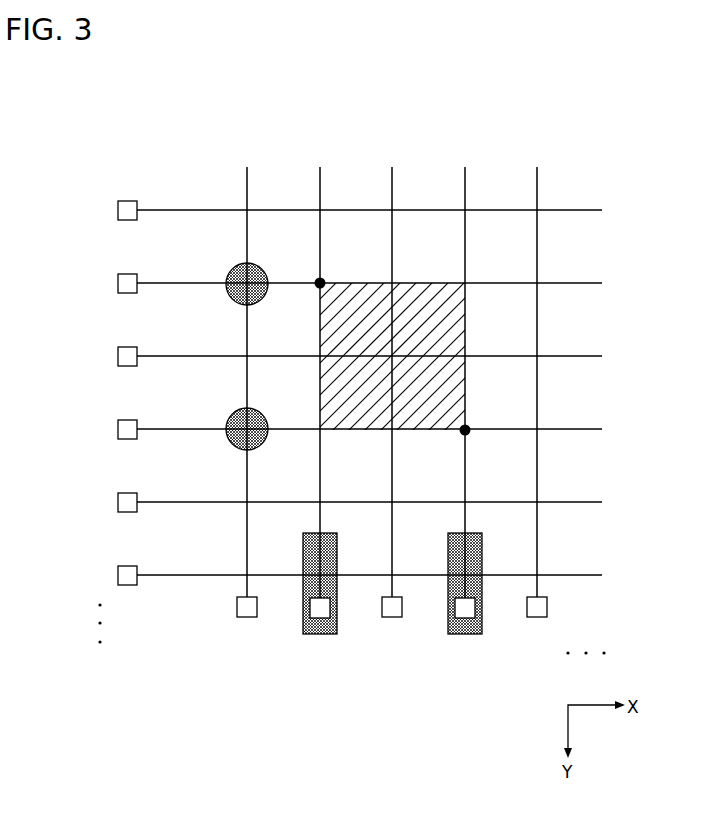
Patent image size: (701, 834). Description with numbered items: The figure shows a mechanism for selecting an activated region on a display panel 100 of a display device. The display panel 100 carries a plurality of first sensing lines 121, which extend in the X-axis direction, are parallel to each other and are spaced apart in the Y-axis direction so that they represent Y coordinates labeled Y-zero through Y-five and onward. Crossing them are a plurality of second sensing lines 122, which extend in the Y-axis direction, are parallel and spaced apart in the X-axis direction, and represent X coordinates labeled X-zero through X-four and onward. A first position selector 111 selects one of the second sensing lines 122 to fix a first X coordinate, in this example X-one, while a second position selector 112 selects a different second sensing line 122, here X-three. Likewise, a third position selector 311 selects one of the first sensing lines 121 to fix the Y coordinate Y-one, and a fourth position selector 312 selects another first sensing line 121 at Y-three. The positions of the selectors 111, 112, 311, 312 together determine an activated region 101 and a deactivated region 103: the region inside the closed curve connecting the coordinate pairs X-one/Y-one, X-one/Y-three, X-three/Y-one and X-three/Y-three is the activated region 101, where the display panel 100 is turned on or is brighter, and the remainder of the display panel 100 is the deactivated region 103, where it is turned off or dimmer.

The display panel 100 is at (356, 403).
The activated region 101 is at (458, 320).
The deactivated region 103 is at (528, 248).
The first position selector 111 is at (308, 628).
The second position selector 112 is at (455, 628).
The first sensing lines 121 is at (173, 211).
The second sensing lines 122 is at (464, 188).
The third position selector 311 is at (242, 270).
The fourth position selector 312 is at (235, 449).